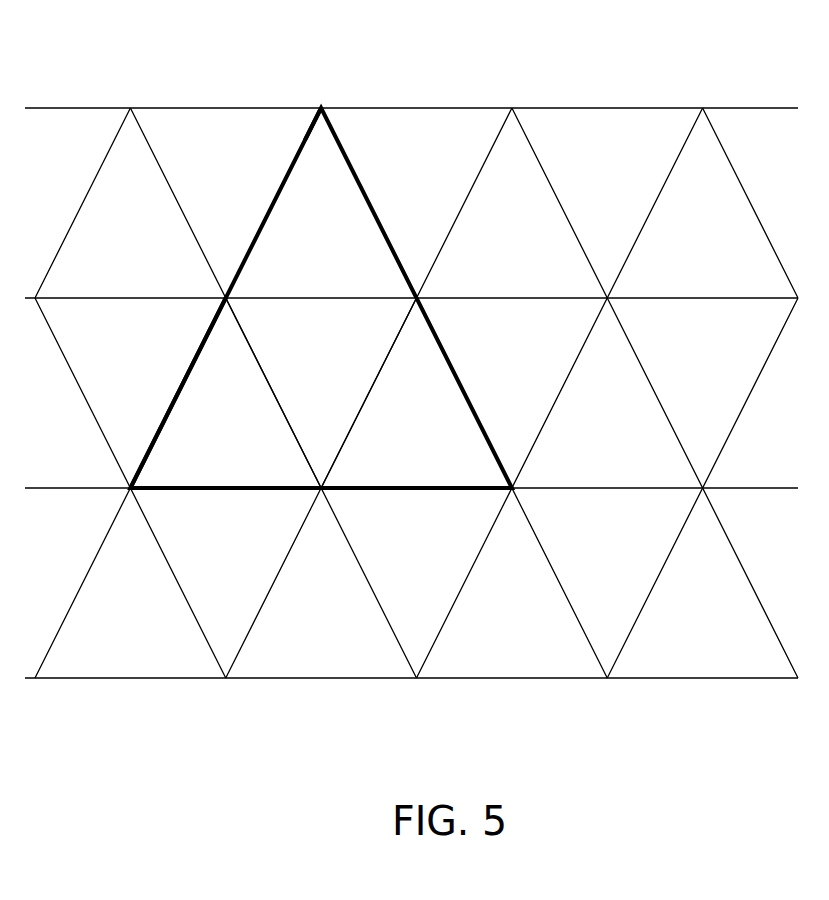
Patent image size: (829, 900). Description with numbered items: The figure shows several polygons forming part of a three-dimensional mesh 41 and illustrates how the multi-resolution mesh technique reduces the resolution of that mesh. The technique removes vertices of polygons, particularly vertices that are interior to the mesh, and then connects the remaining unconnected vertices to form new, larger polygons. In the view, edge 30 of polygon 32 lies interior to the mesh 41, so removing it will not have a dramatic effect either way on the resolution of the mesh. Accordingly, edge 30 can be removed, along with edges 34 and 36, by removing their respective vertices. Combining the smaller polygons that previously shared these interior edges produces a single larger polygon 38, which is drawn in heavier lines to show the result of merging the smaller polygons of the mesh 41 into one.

The 3D mesh 41 is at (484, 66).
The edge 30 is at (373, 218).
The polygon 32 is at (315, 153).
The larger polygon 38 is at (180, 378).
The edge 34 is at (253, 360).
The edge 36 is at (372, 388).